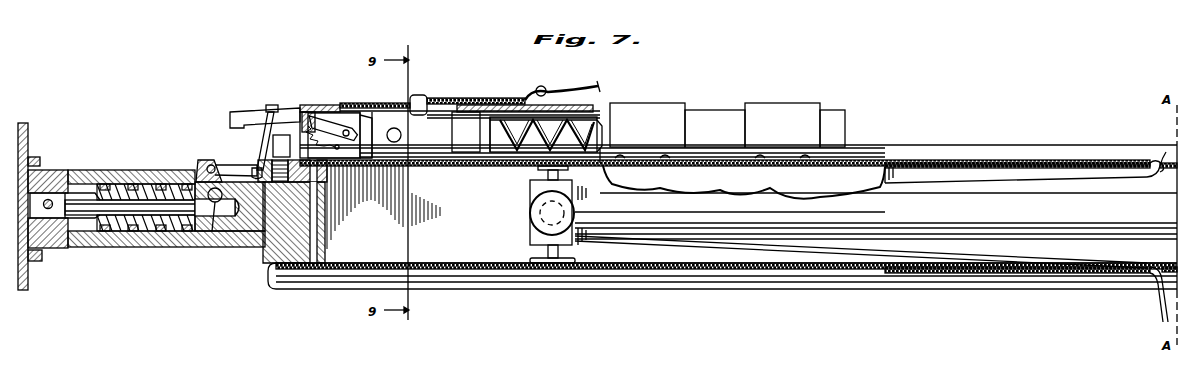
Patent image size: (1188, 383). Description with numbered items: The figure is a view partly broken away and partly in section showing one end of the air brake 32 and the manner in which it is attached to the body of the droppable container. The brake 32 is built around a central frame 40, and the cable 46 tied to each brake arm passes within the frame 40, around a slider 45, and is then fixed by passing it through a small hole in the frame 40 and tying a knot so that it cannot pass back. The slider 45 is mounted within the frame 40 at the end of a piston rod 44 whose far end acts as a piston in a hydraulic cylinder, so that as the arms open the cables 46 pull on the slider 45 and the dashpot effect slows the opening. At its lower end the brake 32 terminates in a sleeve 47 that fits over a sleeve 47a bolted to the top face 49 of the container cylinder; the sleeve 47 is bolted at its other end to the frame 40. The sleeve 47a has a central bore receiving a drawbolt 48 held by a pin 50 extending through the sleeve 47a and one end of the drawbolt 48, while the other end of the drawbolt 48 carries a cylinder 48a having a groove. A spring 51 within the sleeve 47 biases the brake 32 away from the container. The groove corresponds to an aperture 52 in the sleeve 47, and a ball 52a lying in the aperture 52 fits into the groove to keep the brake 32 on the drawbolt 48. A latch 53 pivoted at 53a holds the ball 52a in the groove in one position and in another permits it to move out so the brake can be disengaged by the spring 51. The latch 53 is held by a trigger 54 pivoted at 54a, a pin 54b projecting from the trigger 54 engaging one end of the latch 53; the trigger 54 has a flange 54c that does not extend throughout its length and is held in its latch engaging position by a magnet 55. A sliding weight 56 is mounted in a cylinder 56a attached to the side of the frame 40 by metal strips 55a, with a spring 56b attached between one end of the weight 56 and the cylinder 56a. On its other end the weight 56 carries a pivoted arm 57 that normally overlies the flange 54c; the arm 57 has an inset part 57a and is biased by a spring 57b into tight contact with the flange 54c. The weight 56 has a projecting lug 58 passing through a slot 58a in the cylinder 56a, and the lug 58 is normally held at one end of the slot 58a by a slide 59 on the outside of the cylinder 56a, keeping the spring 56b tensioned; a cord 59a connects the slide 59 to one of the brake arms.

The air brake 32 is at (527, 289).
The central frame 40 is at (652, 271).
The piston rod 44 is at (848, 230).
The slider 45 is at (529, 212).
The cable 46 is at (1004, 170).
The sleeve 47 is at (94, 172).
The sleeve 47a is at (58, 171).
The drawbolt 48 is at (118, 232).
The cylinder 48a is at (232, 234).
The top face 49 is at (29, 136).
The pin 50 is at (48, 210).
The spring 51 is at (128, 172).
The aperture 52 is at (210, 188).
The ball 52a is at (212, 204).
The latch 53 is at (216, 162).
The latch pivot 53a is at (207, 168).
The trigger 54 is at (276, 106).
The trigger pivot 54a is at (273, 140).
The pin 54b is at (254, 168).
The flange 54c is at (266, 107).
The magnet 55 is at (270, 152).
The metal strips 55a is at (384, 104).
The sliding weight 56 is at (430, 163).
The cylinder 56a is at (702, 108).
The spring 56b is at (500, 163).
The arm 57 is at (310, 118).
The inset part 57a is at (236, 125).
The spring 57b is at (338, 108).
The lug 58 is at (424, 96).
The slot 58a is at (472, 104).
The slide 59 is at (510, 98).
The cord 59a is at (598, 88).